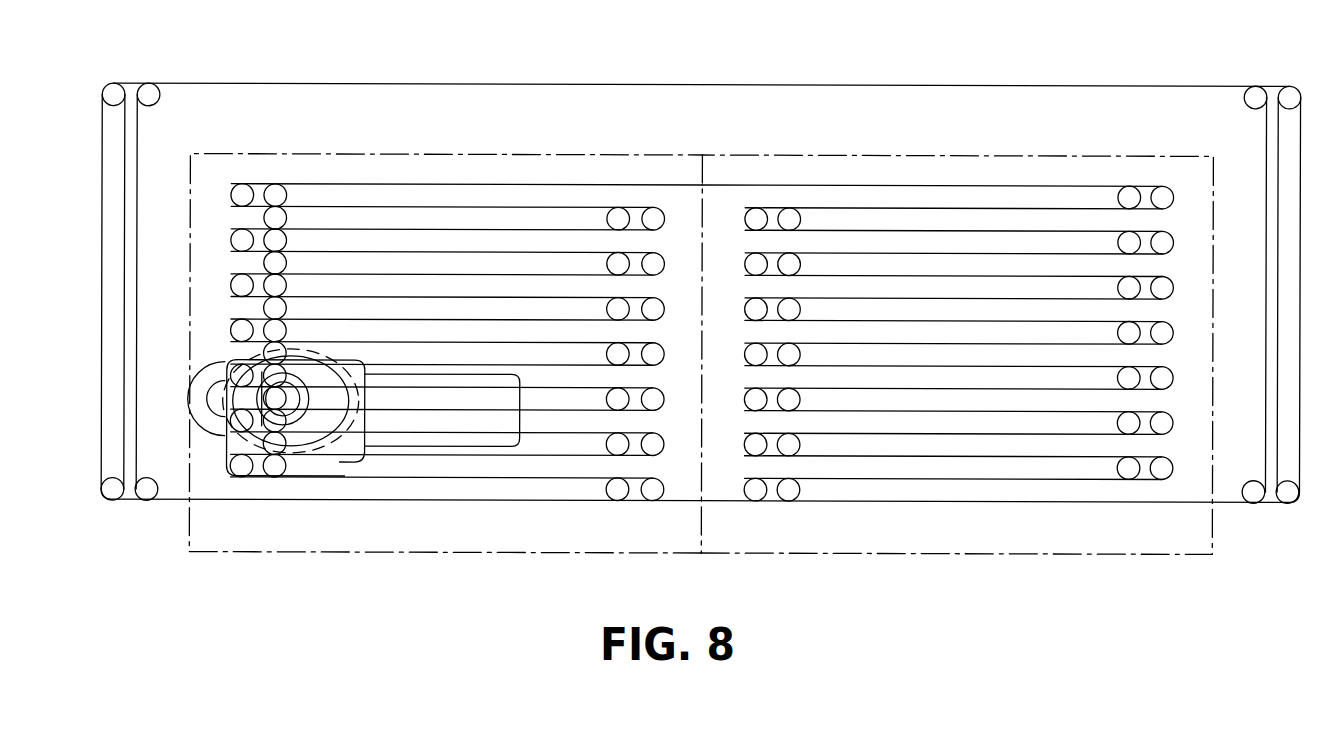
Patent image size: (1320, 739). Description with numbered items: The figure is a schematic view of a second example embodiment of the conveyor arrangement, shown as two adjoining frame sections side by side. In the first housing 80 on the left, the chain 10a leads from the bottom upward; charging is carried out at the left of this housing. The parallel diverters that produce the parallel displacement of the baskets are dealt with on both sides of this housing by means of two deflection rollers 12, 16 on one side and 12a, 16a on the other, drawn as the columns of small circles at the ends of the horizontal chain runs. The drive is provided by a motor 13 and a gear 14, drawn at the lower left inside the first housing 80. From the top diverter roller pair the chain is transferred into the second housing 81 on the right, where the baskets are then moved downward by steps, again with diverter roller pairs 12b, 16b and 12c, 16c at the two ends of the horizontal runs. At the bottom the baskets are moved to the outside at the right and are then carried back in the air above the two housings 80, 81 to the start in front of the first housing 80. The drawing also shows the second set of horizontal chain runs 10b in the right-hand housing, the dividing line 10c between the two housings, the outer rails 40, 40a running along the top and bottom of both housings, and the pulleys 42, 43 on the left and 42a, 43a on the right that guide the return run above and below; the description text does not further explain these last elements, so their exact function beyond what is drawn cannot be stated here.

The chain 10a is at (515, 205).
The second array of slats 10b is at (1000, 205).
The junction line between slat arrays 10c is at (730, 184).
The deflection roller 12 is at (276, 194).
The deflection roller 12a is at (617, 217).
The diverter roller 12b is at (790, 217).
The diverter roller 12c is at (1129, 195).
The motor 13 is at (443, 420).
The gear 14 is at (338, 452).
The deflection roller 16 is at (243, 192).
The deflection roller 16a is at (654, 218).
The diverter roller 16b is at (755, 217).
The diverter roller 16c is at (1162, 195).
The belt rail 40 is at (553, 502).
The belt rail 40a is at (900, 502).
The belt pulley 42 is at (152, 93).
The belt pulley 42a is at (1255, 95).
The belt pulley 43 is at (113, 93).
The belt pulley 43a is at (1290, 94).
The first housing 80 is at (637, 557).
The second housing 81 is at (757, 557).